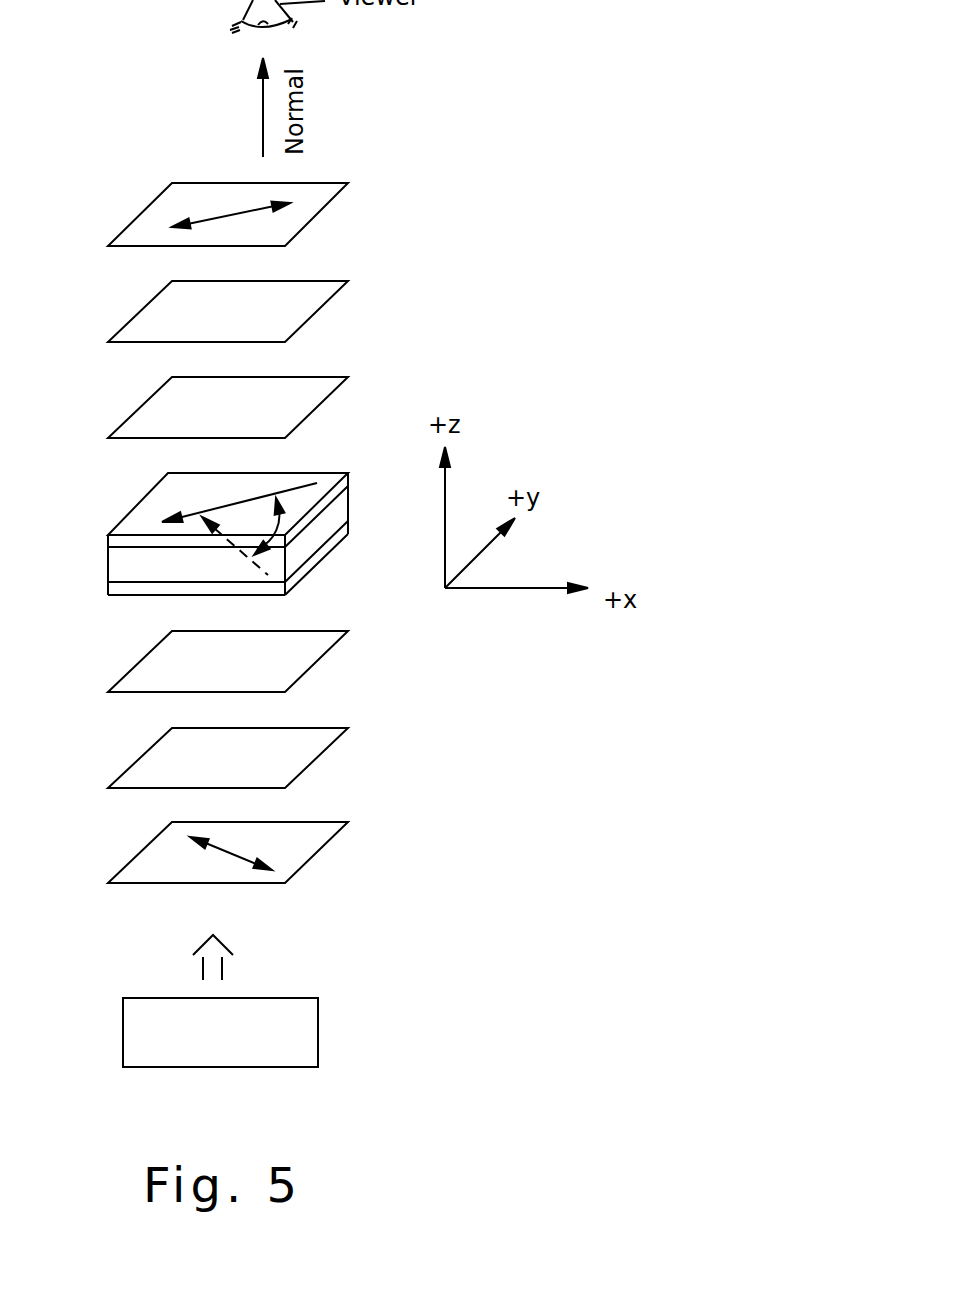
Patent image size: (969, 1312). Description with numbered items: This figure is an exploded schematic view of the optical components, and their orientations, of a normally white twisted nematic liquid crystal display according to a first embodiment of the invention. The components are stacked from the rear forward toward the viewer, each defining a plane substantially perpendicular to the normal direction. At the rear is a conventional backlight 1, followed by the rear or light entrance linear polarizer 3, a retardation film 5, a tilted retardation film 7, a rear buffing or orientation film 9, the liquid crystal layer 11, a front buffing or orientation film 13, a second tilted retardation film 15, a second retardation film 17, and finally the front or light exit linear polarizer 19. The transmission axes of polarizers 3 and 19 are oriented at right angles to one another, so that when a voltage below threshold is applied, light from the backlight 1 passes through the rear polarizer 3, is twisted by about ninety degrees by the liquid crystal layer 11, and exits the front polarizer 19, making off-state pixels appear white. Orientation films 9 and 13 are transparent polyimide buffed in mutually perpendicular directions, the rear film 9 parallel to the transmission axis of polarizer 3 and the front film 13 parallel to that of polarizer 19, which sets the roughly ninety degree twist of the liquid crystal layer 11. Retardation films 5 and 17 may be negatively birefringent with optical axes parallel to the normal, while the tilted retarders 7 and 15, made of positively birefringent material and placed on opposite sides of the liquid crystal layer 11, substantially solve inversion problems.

The backlight 1 is at (310, 1048).
The rear linear polarizer 3 is at (302, 848).
The retardation film 5 is at (297, 750).
The tilted retardation film 7 is at (288, 670).
The rear orientation film 9 is at (323, 553).
The liquid crystal layer 11 is at (333, 519).
The front orientation film 13 is at (108, 543).
The tilted retardation film 15 is at (294, 396).
The retardation film 17 is at (290, 312).
The front linear polarizer 19 is at (302, 188).